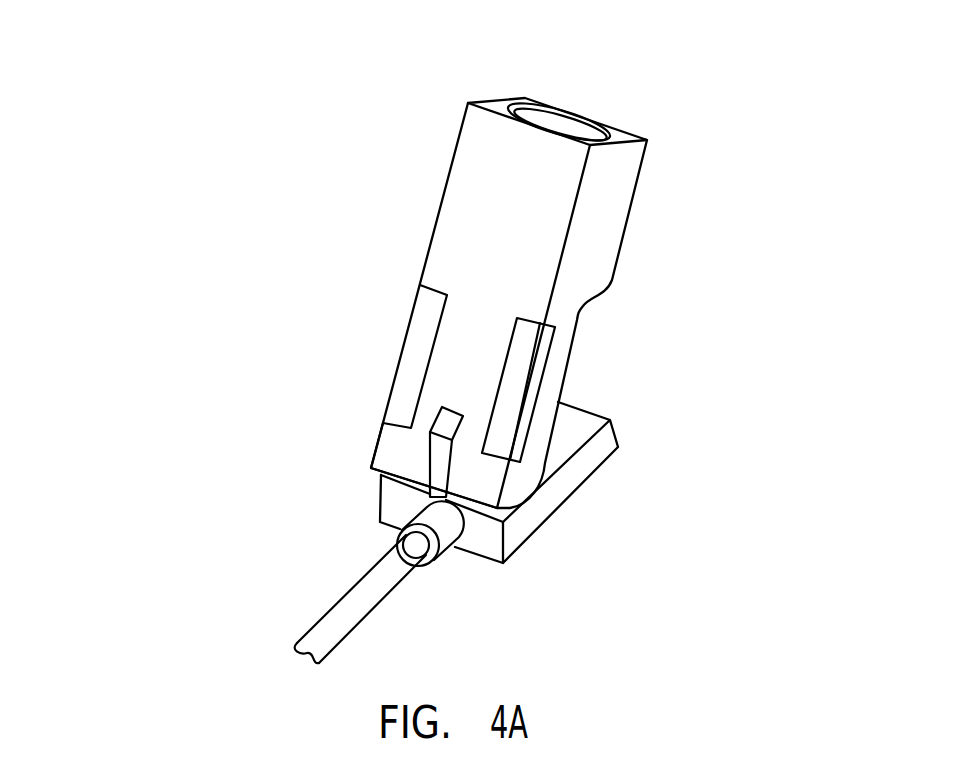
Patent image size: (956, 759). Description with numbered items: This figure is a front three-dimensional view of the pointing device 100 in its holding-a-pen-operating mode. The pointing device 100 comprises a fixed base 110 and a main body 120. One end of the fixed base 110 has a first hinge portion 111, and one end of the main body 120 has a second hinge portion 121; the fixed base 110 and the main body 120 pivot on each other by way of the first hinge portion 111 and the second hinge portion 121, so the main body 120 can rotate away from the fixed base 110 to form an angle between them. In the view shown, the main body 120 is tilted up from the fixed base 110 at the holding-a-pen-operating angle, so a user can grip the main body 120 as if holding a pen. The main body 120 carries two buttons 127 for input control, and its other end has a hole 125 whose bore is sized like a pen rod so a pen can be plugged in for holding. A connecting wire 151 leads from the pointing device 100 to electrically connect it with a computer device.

The pointing device 100 is at (213, 180).
The fixed base 110 is at (552, 500).
The first hinge portion 111 is at (441, 457).
The main body 120 is at (612, 215).
The second hinge portion 121 is at (392, 452).
The hole 125 is at (558, 120).
The buttons 127 is at (510, 395).
The connecting wire 151 is at (365, 593).